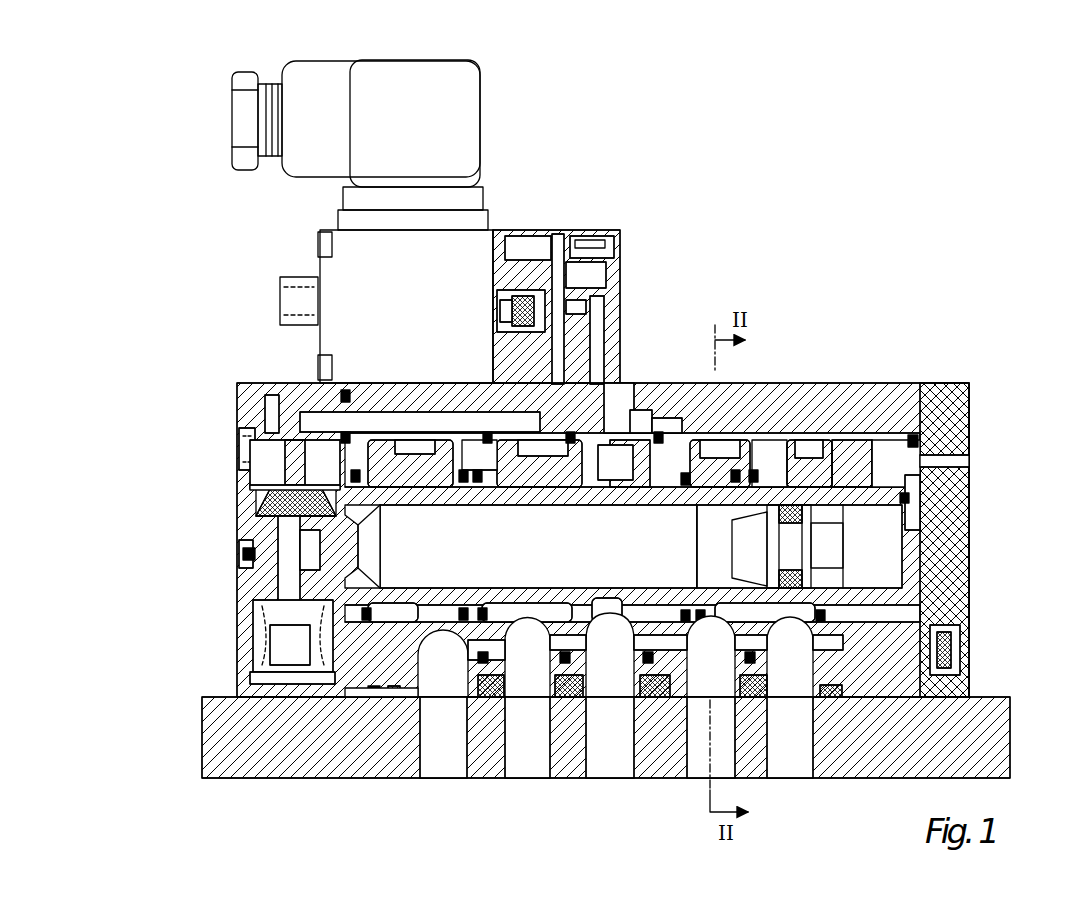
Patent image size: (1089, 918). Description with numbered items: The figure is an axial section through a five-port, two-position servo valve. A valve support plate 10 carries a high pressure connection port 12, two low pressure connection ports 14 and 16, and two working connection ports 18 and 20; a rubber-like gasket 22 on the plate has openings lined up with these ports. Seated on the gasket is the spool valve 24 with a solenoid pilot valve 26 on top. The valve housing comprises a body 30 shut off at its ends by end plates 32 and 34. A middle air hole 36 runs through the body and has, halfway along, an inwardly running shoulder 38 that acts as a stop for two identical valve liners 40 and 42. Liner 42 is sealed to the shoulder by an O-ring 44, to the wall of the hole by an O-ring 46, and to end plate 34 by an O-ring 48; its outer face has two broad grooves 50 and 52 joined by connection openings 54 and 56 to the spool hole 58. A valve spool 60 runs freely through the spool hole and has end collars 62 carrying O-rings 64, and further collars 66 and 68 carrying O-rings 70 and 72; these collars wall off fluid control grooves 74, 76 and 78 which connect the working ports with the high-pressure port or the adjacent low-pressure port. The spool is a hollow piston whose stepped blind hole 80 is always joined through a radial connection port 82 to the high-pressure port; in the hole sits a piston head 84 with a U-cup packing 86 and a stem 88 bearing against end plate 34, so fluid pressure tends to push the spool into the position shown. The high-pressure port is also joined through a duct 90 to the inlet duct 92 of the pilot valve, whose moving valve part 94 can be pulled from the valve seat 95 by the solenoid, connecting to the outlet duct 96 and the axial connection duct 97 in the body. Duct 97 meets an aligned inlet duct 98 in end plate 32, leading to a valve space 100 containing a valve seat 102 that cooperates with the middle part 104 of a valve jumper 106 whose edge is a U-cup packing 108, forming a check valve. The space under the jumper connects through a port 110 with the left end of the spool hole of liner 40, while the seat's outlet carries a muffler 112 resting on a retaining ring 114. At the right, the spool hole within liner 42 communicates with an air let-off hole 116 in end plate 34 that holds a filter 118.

The valve support plate 10 is at (862, 758).
The high pressure connection port 12 is at (610, 763).
The low pressure connection port 14 is at (423, 733).
The low pressure connection port 16 is at (812, 760).
The working connection port 18 is at (507, 747).
The working connection port 20 is at (690, 740).
The gasket 22 is at (370, 700).
The 5 port, 2 position valve 24 is at (883, 380).
The solenoid pilot valve 26 is at (504, 212).
The valve body 30 is at (782, 445).
The end plate 32 is at (297, 391).
The end plate 34 is at (952, 410).
The middle air hole 36 is at (912, 440).
The shoulder 38 is at (640, 388).
The valve liner 40 is at (452, 678).
The valve liner 42 is at (800, 690).
The O-ring 44 is at (672, 388).
The O-ring 46 is at (790, 445).
The O-ring 48 is at (935, 460).
The broad groove 50 is at (727, 395).
The broad groove 52 is at (840, 448).
The connection opening 54 is at (752, 440).
The connection opening 56 is at (835, 445).
The spool hole 58 is at (915, 480).
The valve spool 60 is at (392, 686).
The collar 62 is at (350, 470).
The O-ring 64 is at (356, 470).
The collar 66 is at (462, 470).
The collar 68 is at (693, 482).
The O-ring 70 is at (432, 470).
The O-ring 72 is at (490, 470).
The fluid control groove 74 is at (398, 605).
The fluid control groove 76 is at (522, 605).
The fluid control groove 78 is at (733, 606).
The stepped blind hole 80 is at (556, 505).
The radial connection port 82 is at (614, 603).
The piston head 84 is at (742, 552).
The U-cup packing 86 is at (800, 520).
The stem 88 is at (870, 560).
The duct 90 is at (620, 390).
The inlet duct 92 is at (613, 312).
The moving valve part 94 is at (523, 282).
The valve seat 95 is at (552, 240).
The outlet duct 96 is at (620, 277).
The connection duct 97 is at (395, 470).
The inlet duct 98 is at (278, 403).
The valve space 100 is at (246, 475).
The valve seat 102 is at (246, 546).
The middle part 104 is at (256, 507).
The valve jumper 106 is at (238, 400).
The U-cup packing 108 is at (249, 496).
The port 110 is at (296, 543).
The muffler 112 is at (260, 650).
The retaining ring 114 is at (246, 673).
The air let-off hole 116 is at (950, 640).
The filter 118 is at (955, 655).